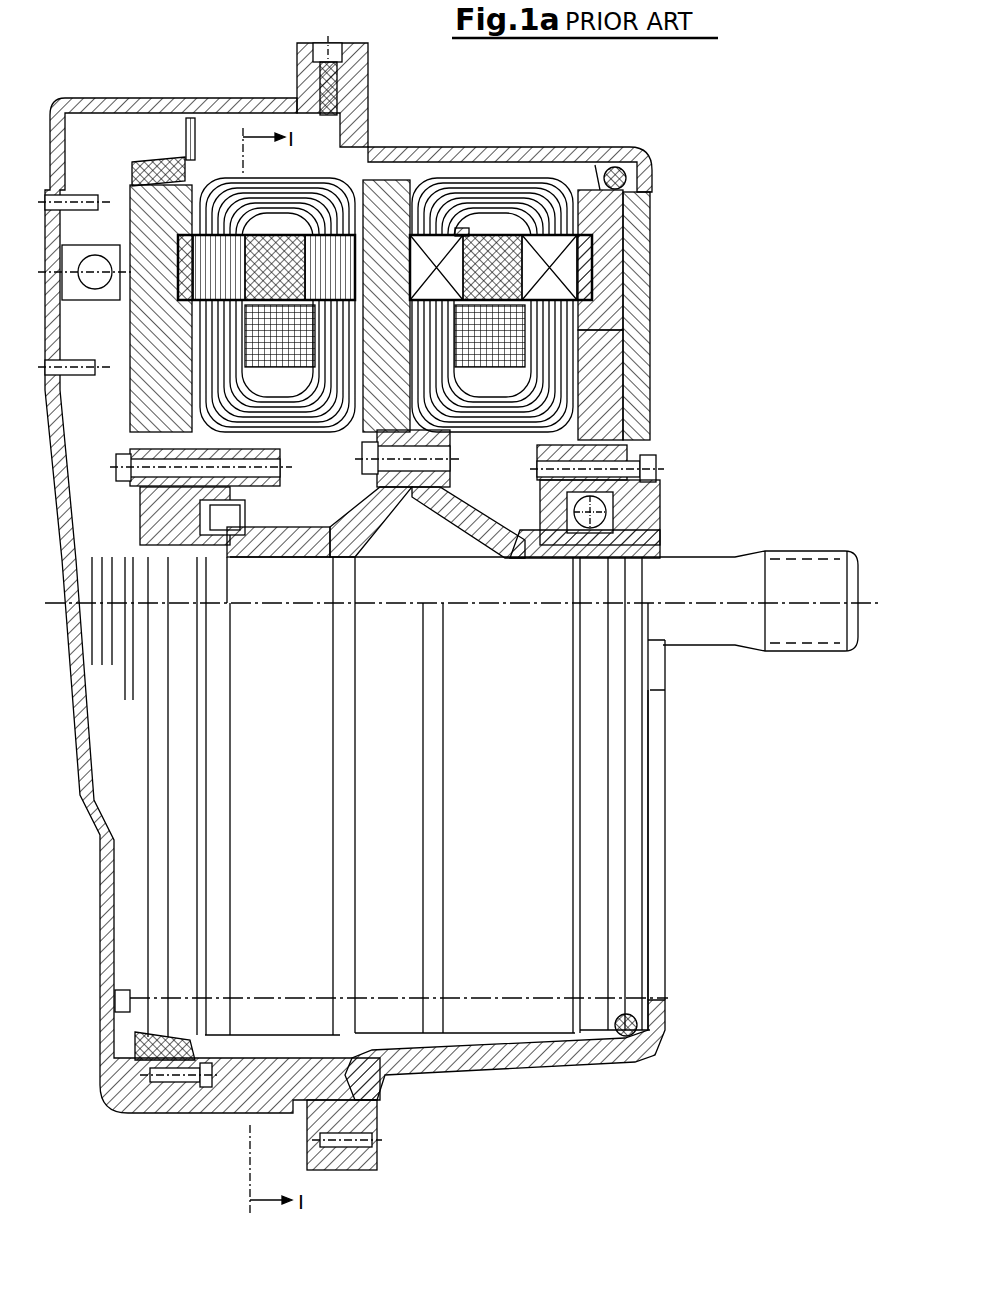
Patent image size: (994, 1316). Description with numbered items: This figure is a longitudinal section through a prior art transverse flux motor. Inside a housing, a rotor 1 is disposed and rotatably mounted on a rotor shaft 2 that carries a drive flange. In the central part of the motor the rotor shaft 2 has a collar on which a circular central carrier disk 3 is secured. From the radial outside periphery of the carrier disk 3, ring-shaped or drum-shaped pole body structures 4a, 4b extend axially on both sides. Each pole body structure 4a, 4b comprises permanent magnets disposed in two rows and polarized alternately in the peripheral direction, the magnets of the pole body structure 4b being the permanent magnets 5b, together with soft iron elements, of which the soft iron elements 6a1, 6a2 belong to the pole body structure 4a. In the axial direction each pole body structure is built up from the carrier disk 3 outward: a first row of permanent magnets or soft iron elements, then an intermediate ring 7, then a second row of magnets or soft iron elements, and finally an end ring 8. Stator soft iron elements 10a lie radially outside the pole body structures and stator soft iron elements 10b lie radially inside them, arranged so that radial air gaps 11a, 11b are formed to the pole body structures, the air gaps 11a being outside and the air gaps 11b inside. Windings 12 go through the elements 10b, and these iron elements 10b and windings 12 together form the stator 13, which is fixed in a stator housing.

The rotor 1 is at (575, 178).
The rotor shaft 2 is at (478, 505).
The carrier disk 3 is at (386, 306).
The pole body structure 4a is at (150, 165).
The pole body structure 4b is at (460, 230).
The permanent magnets 5b is at (501, 269).
The soft iron element 6a1 is at (330, 267).
The soft iron element 6a2 is at (219, 267).
The intermediate ring 7 is at (275, 267).
The end ring 8 is at (640, 250).
The stator soft iron elements 10a is at (386, 207).
The stator soft iron elements 10b is at (386, 366).
The air gap 11a is at (652, 192).
The air gap 11b is at (625, 320).
The windings 12 is at (385, 336).
The stator 13 is at (578, 395).